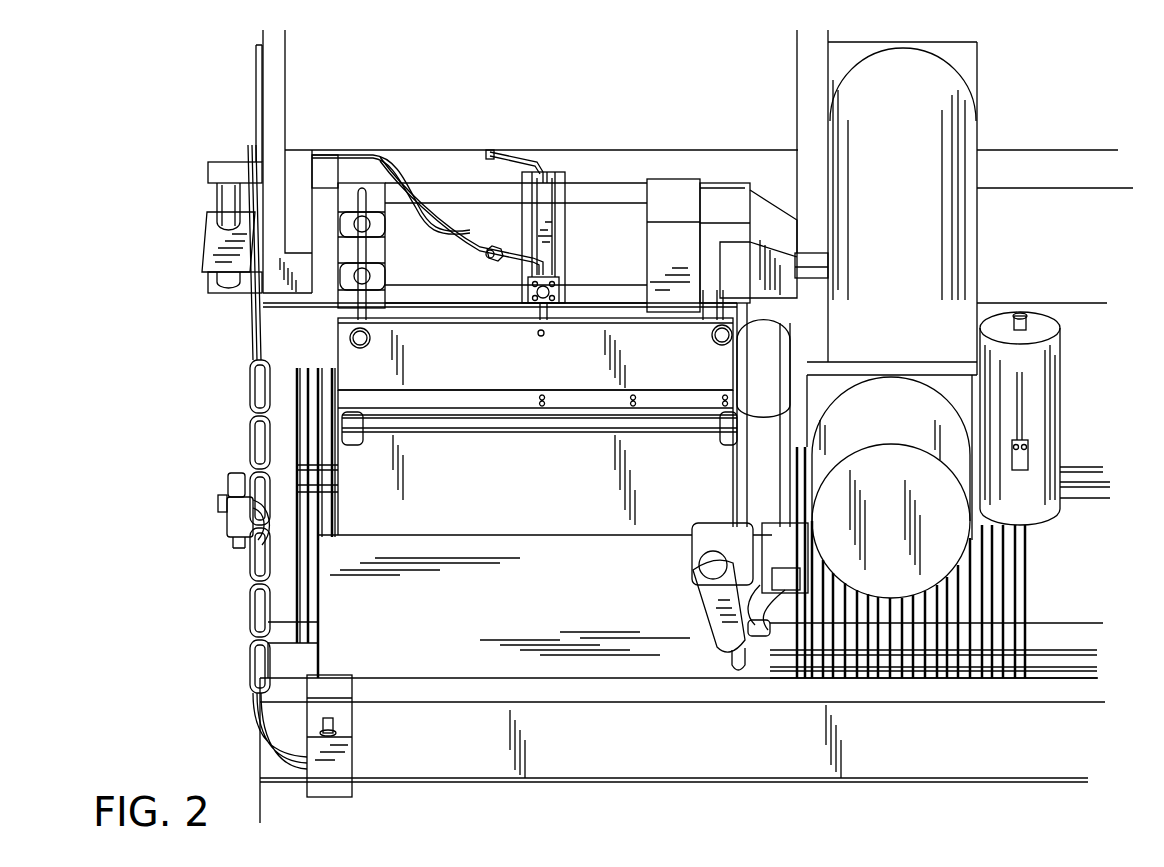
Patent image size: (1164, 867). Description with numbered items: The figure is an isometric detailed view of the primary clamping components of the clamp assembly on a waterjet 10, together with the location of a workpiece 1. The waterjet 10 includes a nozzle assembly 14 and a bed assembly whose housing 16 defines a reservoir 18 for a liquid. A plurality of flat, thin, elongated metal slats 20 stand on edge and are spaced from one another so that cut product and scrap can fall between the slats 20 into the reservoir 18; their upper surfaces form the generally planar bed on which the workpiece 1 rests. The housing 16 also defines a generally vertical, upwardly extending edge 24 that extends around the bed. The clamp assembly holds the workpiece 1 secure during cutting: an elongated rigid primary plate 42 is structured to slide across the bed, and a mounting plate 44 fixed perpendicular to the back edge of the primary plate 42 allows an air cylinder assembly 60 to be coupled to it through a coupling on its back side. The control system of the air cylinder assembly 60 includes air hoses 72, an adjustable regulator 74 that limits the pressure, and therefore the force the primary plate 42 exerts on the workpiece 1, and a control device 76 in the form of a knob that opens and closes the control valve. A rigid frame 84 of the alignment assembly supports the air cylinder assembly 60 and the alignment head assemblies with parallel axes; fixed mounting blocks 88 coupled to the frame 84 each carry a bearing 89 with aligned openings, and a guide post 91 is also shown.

The waterjet 10 is at (207, 385).
The workpiece 1 is at (510, 647).
The nozzle assembly 14 is at (713, 617).
The housing 16 is at (260, 768).
The reservoir 18 is at (1078, 609).
The slats 20 is at (1023, 590).
The upwardly extending edge 24 is at (390, 683).
The primary plate 42 is at (554, 492).
The mounting plate 44 is at (535, 363).
The air cylinder assembly 60 is at (550, 238).
The air hoses 72 is at (525, 148).
The regulator 74 is at (230, 538).
The control device 76 is at (348, 767).
The rigid frame 84 is at (437, 187).
The fixed mounting blocks 88 is at (387, 237).
The bearing 89 is at (374, 212).
The guide post 91 is at (381, 283).